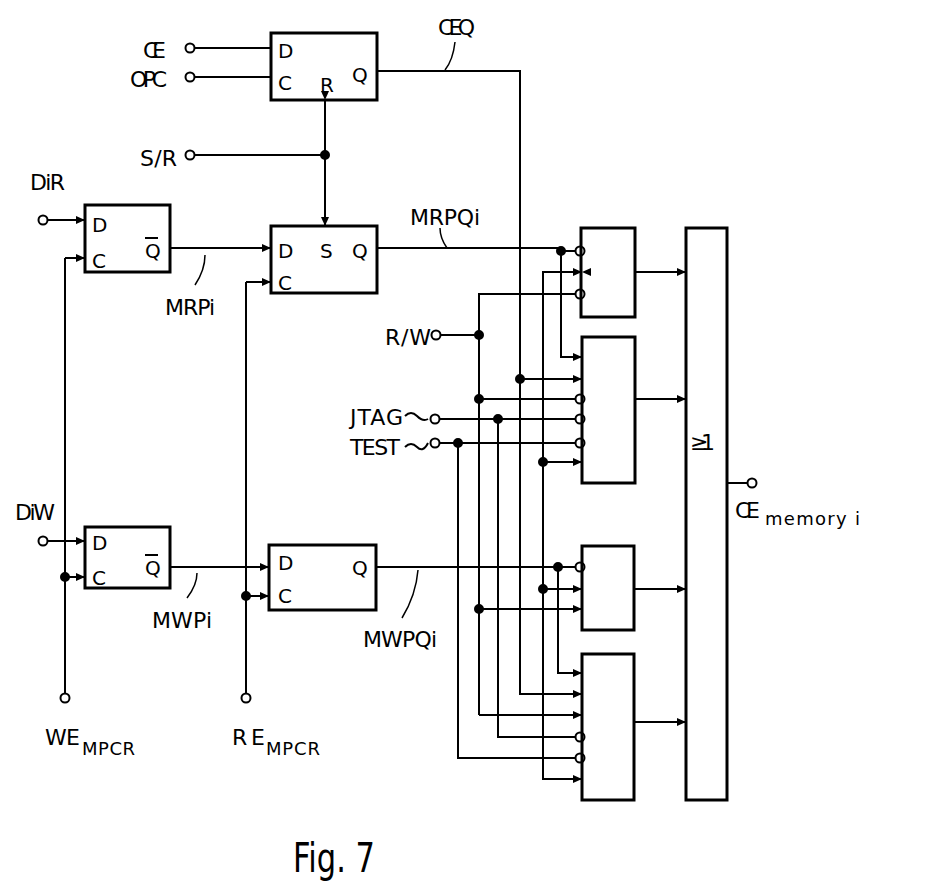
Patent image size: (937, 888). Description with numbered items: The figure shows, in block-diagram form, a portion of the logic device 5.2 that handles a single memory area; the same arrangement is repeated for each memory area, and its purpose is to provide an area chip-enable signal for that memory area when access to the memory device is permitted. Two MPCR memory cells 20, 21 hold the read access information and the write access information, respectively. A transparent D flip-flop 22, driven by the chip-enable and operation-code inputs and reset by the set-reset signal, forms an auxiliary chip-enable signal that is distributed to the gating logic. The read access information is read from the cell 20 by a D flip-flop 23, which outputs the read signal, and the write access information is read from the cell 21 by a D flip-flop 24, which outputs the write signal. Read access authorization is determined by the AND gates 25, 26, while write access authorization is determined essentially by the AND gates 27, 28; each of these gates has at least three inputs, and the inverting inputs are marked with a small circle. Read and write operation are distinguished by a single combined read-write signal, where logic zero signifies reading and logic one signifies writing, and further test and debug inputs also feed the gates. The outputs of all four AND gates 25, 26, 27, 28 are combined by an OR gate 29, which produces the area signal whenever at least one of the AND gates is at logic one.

The MPCR memory cell 20 is at (170, 210).
The MPCR memory cell 21 is at (170, 537).
The transparent D flip-flop 22 is at (365, 100).
The D flip-flop 23 is at (355, 226).
The D flip-flop 24 is at (341, 545).
The AND gate 25 is at (635, 250).
The AND gate 26 is at (635, 370).
The AND gate 27 is at (634, 556).
The AND gate 28 is at (634, 676).
The OR gate 29 is at (727, 280).
The logic device 5.2 is at (615, 152).